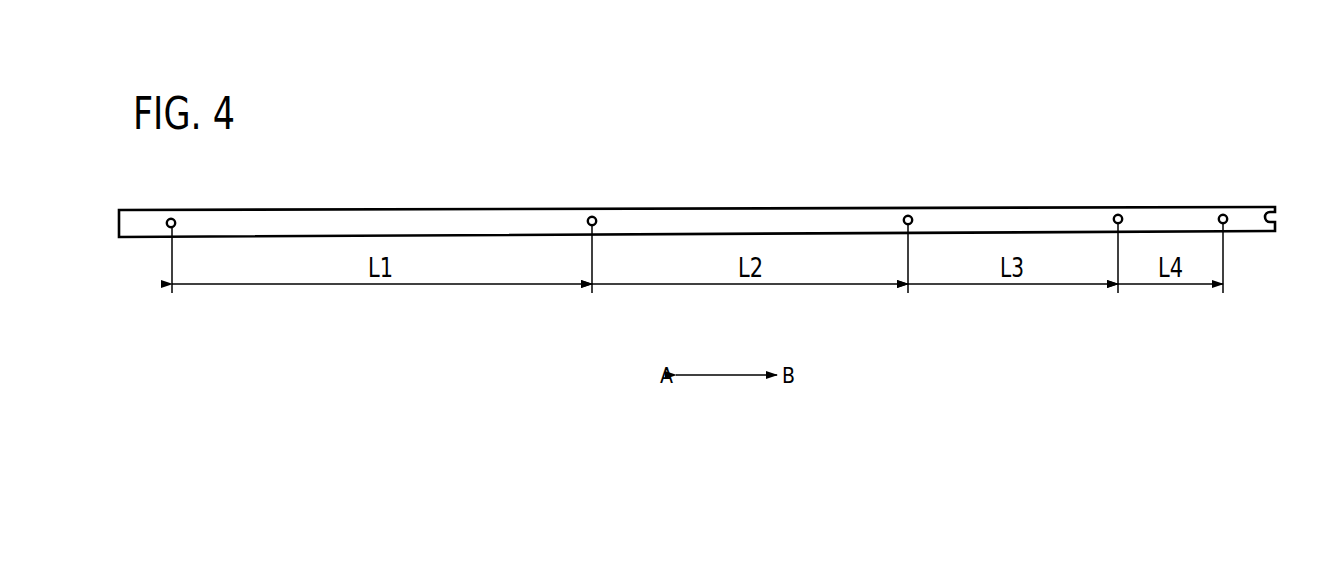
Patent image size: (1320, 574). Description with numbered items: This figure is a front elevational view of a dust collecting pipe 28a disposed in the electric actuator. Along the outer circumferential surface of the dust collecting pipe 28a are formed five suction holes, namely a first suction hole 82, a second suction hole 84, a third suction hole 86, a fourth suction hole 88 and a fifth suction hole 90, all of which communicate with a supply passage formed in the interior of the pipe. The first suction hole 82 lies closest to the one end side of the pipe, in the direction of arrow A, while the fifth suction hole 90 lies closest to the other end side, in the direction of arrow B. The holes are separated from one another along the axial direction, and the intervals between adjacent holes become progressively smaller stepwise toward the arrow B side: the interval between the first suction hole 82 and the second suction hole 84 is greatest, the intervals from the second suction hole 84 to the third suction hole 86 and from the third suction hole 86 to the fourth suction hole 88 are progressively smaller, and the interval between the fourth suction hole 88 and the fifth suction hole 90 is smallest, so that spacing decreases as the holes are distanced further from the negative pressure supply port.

The dust collecting pipe 28a is at (356, 207).
The first suction hole 82 is at (176, 224).
The second suction hole 84 is at (597, 222).
The third suction hole 86 is at (913, 221).
The fourth suction hole 88 is at (1123, 220).
The fifth suction hole 90 is at (1228, 220).